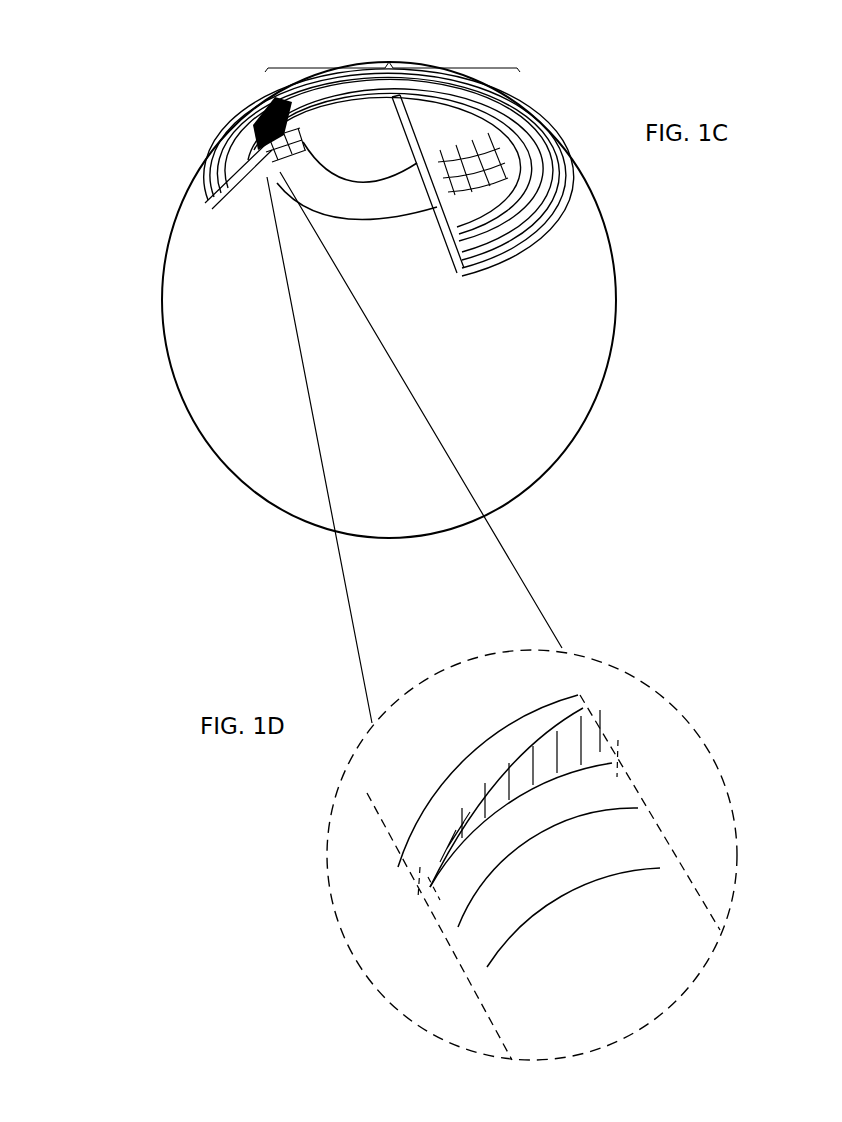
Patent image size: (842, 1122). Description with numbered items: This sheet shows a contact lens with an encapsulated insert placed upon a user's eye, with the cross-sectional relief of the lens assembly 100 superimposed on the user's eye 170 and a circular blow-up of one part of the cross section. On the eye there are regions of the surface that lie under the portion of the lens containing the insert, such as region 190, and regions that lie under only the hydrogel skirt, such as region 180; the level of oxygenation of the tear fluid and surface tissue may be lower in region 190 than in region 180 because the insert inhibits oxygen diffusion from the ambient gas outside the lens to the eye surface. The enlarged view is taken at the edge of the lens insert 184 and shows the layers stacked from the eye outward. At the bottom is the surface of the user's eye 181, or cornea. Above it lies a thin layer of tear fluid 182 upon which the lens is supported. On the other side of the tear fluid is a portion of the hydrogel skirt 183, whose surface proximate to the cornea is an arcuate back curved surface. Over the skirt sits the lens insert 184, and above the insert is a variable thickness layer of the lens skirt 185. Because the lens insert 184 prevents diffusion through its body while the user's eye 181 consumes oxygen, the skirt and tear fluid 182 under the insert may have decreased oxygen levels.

In FIG. 1C, the head-mounted display device 100 is at (389, 149).
In FIG. 1C, the user's eye 170 is at (388, 326).
In FIG. 1C, the region under hydrogel skirt 180 is at (260, 208).
In FIG. 1C, the region under insert 190 is at (362, 148).
In FIG. 1D, the surface of the user's eye 181 is at (507, 946).
In FIG. 1D, the thin layer of tear fluid 182 is at (508, 903).
In FIG. 1D, the hydrogel skirt 183 is at (483, 855).
In FIG. 1D, the lens insert 184 is at (472, 815).
In FIG. 1D, the variable thickness layer of the lens skirt 185 is at (445, 810).